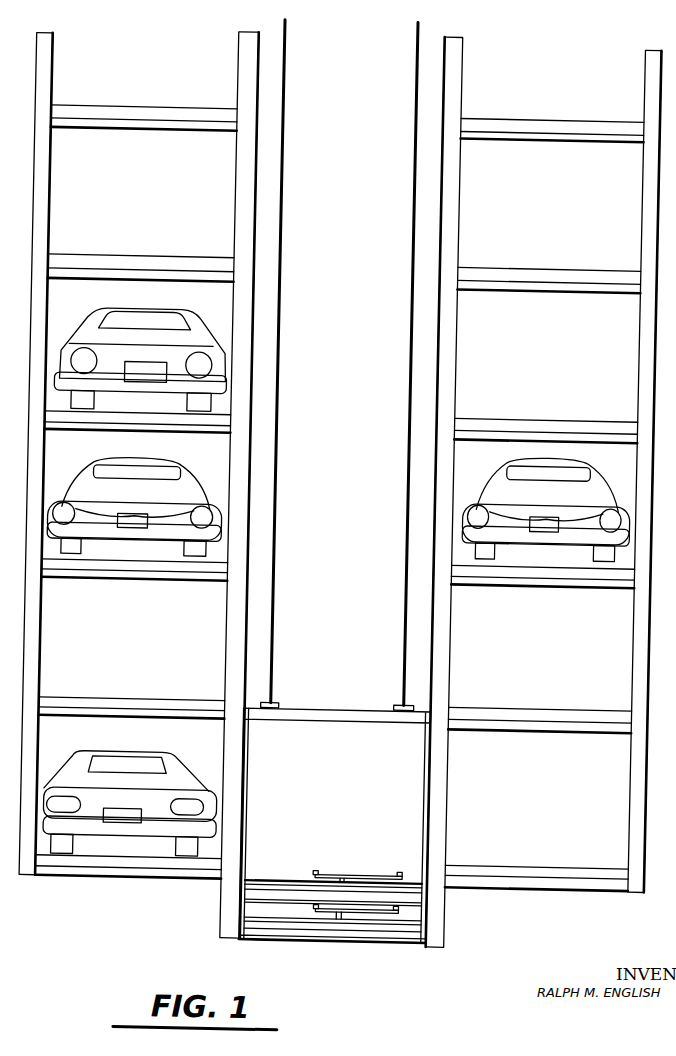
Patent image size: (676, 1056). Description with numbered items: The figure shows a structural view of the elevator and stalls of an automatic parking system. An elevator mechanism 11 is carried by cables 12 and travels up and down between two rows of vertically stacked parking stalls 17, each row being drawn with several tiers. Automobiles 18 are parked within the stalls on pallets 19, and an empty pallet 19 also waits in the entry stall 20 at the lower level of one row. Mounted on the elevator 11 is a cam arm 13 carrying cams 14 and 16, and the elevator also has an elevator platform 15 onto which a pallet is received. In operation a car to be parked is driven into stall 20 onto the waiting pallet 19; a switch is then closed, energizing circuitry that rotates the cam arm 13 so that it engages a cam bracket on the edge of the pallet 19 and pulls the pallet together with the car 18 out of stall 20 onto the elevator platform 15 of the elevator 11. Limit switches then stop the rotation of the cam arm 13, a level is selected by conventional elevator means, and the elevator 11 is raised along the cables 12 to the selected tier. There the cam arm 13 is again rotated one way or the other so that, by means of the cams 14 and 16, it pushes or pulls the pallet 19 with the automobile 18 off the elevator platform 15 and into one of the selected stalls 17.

The elevator mechanism 11 is at (335, 825).
The cables 12 is at (344, 365).
The cam arm 13 is at (348, 903).
The cam 14 is at (298, 883).
The elevator platform 15 is at (333, 896).
The cam 16 is at (430, 883).
The parking stalls 17 is at (552, 791).
The automobiles 18 is at (337, 602).
The pallets 19 is at (340, 484).
The stall 20 is at (131, 788).